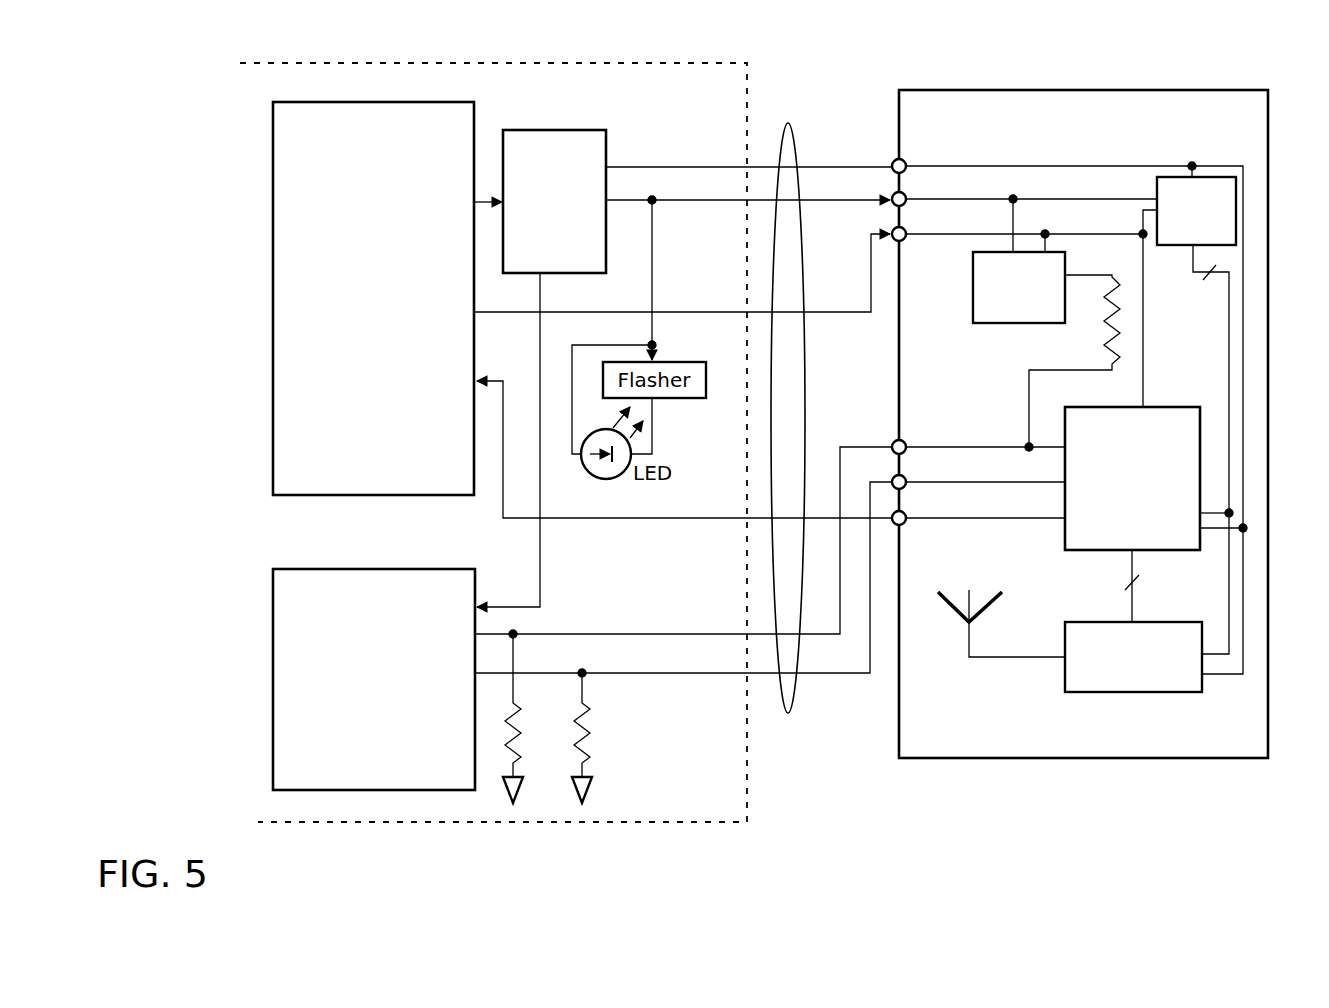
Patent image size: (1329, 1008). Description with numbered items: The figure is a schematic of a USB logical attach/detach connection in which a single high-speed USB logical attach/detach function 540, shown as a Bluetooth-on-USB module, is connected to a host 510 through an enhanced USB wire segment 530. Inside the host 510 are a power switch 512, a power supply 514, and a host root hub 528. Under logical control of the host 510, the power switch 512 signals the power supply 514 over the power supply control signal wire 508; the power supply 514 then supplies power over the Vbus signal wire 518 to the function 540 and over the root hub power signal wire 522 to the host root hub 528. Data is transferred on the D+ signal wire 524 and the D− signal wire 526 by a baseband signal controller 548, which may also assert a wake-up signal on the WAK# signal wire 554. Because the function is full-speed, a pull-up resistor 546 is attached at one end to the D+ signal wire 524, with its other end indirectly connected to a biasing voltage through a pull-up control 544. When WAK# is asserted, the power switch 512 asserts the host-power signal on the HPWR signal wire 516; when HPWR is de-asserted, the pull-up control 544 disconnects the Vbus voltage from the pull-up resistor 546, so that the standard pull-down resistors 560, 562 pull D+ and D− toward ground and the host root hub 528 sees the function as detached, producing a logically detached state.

The power supply control signal wire 508 is at (488, 207).
The host 510 is at (330, 822).
The power switch 512 is at (273, 138).
The power supply 514 is at (585, 130).
The HPWR signal wire 516 is at (594, 312).
The Vbus signal wire 518 is at (700, 200).
The root hub power signal wire 522 is at (541, 566).
The D+ signal wire 524 is at (851, 445).
The D− signal wire 526 is at (847, 676).
The host root hub 528 is at (273, 604).
The enhanced USB wire segment 530 is at (792, 130).
The USB logical attach/detach function 540 is at (1268, 120).
The pull-up control 544 is at (973, 290).
The pull-up resistor 546 is at (1048, 353).
The baseband signal controller 548 is at (1065, 545).
The WAK# signal wire 554 is at (940, 521).
The pull-down resistor 560 is at (500, 740).
The pull-down resistor 562 is at (590, 728).